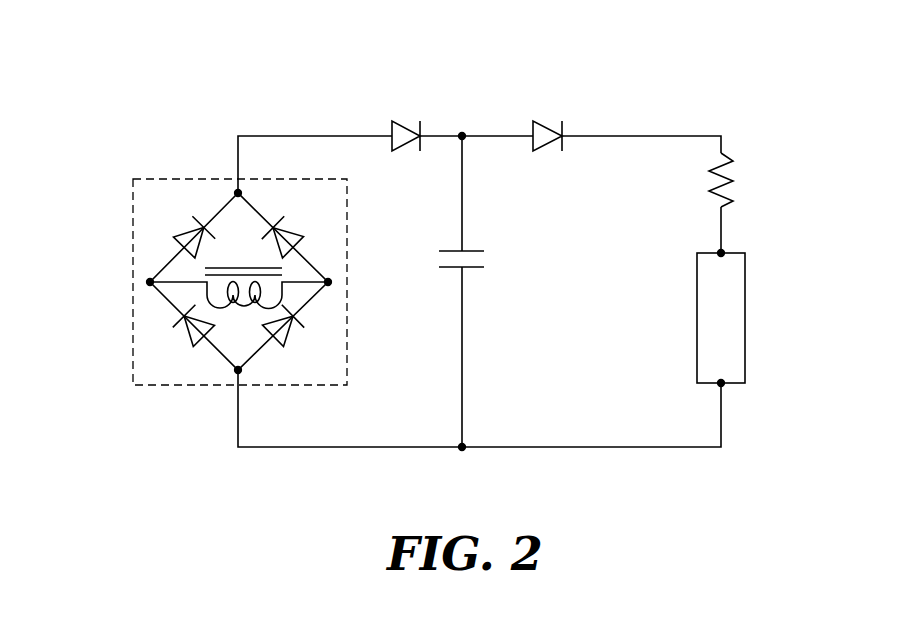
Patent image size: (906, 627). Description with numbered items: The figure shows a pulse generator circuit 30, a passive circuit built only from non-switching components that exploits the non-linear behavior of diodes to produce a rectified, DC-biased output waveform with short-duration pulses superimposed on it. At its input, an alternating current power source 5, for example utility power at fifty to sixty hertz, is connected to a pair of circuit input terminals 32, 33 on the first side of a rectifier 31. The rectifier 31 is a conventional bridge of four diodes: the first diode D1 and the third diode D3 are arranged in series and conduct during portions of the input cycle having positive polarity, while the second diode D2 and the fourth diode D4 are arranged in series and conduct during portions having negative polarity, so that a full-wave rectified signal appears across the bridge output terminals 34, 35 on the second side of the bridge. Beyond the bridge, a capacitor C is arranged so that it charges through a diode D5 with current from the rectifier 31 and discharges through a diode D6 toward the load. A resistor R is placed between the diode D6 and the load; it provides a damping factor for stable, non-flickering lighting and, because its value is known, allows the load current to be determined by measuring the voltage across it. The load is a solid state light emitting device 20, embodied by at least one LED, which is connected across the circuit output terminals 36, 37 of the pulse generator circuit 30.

The pulse generator circuit 30 is at (203, 102).
The rectifier 31 is at (133, 203).
The circuit input terminal 32 is at (150, 282).
The circuit input terminal 33 is at (328, 282).
The bridge output terminal 34 is at (238, 193).
The bridge output terminal 35 is at (238, 370).
The circuit output terminal 36 is at (721, 253).
The circuit output terminal 37 is at (721, 383).
The alternating current power source 5 is at (240, 268).
The solid state light emitting device 20 is at (709, 326).
The first diode D1 is at (187, 233).
The second diode D2 is at (293, 233).
The third diode D3 is at (295, 332).
The fourth diode D4 is at (184, 332).
The diode D5 is at (404, 121).
The diode D6 is at (547, 121).
The capacitor C is at (473, 292).
The resistor R is at (709, 180).